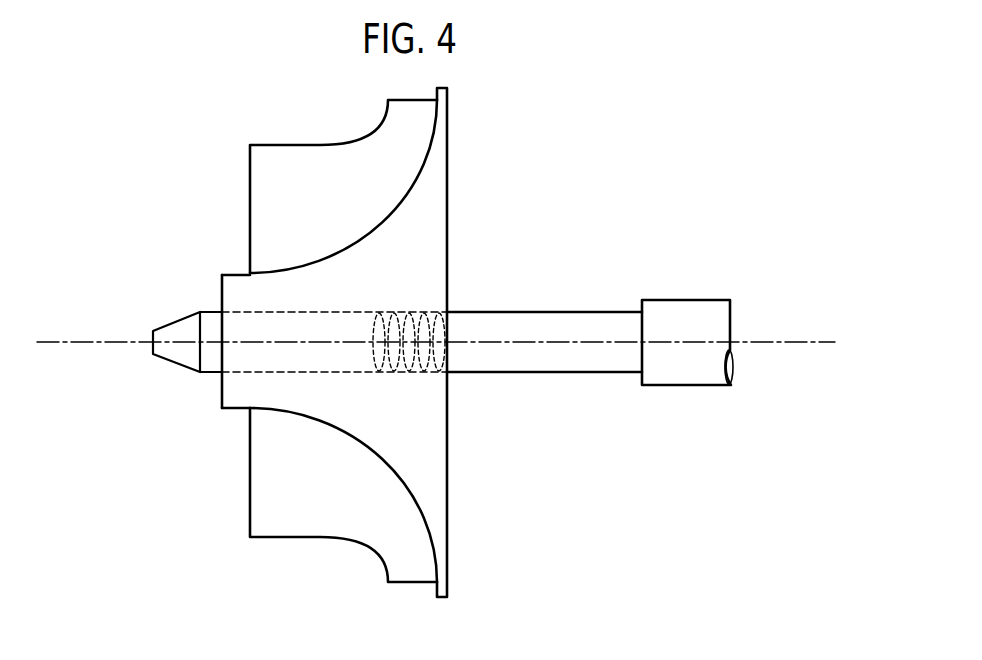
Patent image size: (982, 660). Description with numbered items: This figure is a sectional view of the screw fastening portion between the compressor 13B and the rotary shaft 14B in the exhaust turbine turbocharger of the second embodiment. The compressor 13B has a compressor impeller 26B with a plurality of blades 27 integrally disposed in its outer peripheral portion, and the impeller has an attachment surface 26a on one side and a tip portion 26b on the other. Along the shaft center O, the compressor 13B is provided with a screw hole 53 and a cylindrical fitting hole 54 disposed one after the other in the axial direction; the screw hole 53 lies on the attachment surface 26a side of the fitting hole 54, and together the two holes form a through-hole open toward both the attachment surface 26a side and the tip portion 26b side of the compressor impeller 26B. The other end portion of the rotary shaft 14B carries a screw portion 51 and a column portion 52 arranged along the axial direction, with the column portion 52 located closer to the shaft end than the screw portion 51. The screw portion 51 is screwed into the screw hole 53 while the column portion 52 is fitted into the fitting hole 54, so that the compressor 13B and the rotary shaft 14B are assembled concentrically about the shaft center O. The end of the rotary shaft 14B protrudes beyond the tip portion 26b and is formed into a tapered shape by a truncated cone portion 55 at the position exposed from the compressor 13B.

The compressor 13B is at (335, 347).
The rotary shaft 14B is at (692, 293).
The compressor impeller 26B is at (186, 385).
The attachment surface 26a is at (450, 452).
The tip portion 26b is at (222, 386).
The blades 27 is at (290, 172).
The screw portion 51 is at (417, 312).
The column portion 52 is at (343, 328).
The screw hole 53 is at (448, 375).
The fitting hole 54 is at (318, 362).
The truncated cone portion 55 is at (183, 330).
The shaft center O is at (62, 346).